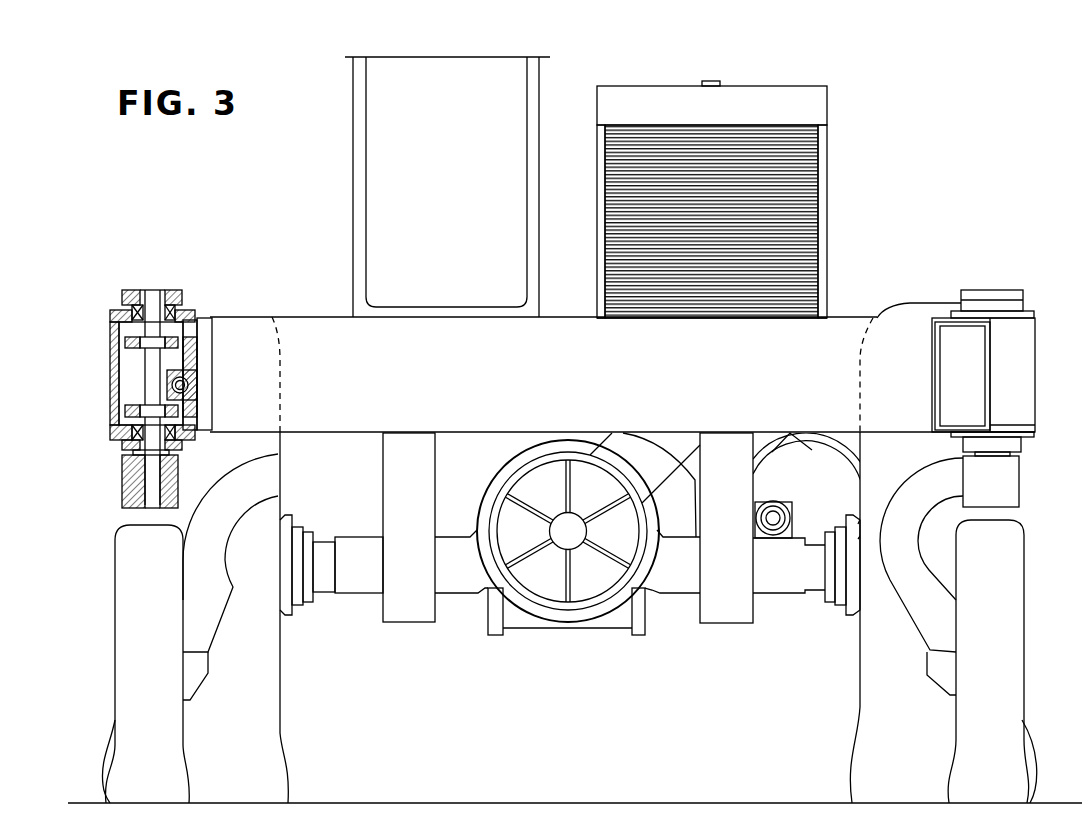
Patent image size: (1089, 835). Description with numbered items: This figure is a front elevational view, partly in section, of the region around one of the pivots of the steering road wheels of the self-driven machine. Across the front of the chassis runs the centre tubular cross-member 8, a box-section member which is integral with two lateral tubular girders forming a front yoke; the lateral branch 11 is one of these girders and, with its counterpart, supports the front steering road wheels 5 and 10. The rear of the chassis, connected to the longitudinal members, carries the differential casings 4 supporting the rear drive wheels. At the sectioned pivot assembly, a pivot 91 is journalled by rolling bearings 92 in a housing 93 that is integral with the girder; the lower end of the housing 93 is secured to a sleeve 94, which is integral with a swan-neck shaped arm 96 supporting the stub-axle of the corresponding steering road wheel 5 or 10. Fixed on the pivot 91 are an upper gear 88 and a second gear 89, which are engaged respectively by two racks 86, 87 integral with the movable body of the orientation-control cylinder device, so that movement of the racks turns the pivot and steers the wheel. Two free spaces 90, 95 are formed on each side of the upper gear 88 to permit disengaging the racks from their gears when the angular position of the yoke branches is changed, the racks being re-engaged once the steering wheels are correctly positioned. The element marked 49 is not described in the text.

The differential casings 4 is at (355, 580).
The front steering road wheel 5 is at (1005, 595).
The centre tubular cross-member 8 is at (545, 357).
The front steering road wheel 10 is at (131, 572).
The lateral branch 11 is at (210, 385).
The fuel tank 49 is at (383, 159).
The rack 86 is at (195, 344).
The rack 87 is at (195, 399).
The upper gear 88 is at (128, 340).
The gear 89 is at (130, 410).
The free space 90 is at (120, 325).
The pivot 91 is at (150, 291).
The rolling bearings 92 is at (128, 307).
The housing 93 is at (112, 362).
The sleeve 94 is at (135, 478).
The free space 95 is at (192, 358).
The swan-neck shaped arm 96 is at (238, 503).